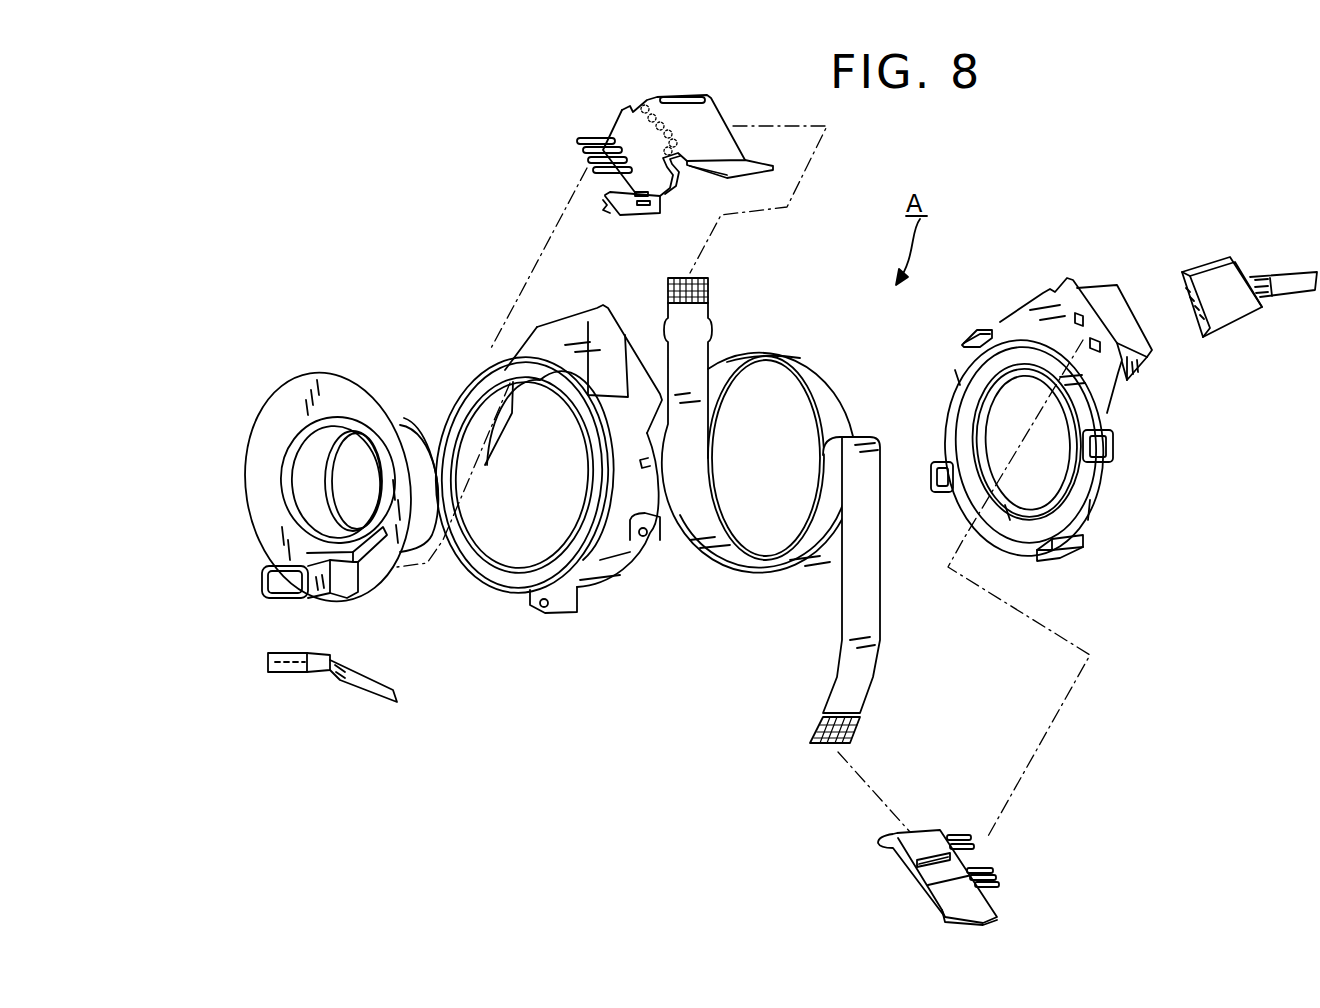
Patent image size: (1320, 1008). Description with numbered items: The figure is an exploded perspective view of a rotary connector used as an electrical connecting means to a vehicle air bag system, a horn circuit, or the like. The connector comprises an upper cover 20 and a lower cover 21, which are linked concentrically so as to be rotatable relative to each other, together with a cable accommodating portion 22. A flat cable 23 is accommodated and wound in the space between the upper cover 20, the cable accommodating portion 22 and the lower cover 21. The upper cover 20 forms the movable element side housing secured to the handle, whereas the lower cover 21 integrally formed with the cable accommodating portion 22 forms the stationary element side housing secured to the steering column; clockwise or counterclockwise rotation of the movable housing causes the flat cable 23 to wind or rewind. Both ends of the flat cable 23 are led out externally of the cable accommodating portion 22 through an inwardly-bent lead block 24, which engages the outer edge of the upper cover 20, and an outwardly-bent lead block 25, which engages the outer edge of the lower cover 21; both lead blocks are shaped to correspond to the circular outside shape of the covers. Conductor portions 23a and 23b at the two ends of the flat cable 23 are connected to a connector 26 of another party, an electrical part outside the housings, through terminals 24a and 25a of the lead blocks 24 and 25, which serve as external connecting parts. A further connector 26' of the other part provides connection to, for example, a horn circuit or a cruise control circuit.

The upper cover 20 is at (267, 540).
The lower cover 21 is at (1070, 517).
The cable accommodating portion 22 is at (549, 614).
The flat cable 23 is at (850, 618).
The conductor portion 23a is at (710, 291).
The conductor portion 23b is at (855, 736).
The inwardly-bent lead block 24 is at (623, 127).
The terminals 24a is at (583, 152).
The outwardly-bent lead block 25 is at (890, 850).
The terminals 25a is at (995, 873).
The connector 26 is at (1249, 322).
The connector 26' is at (332, 703).